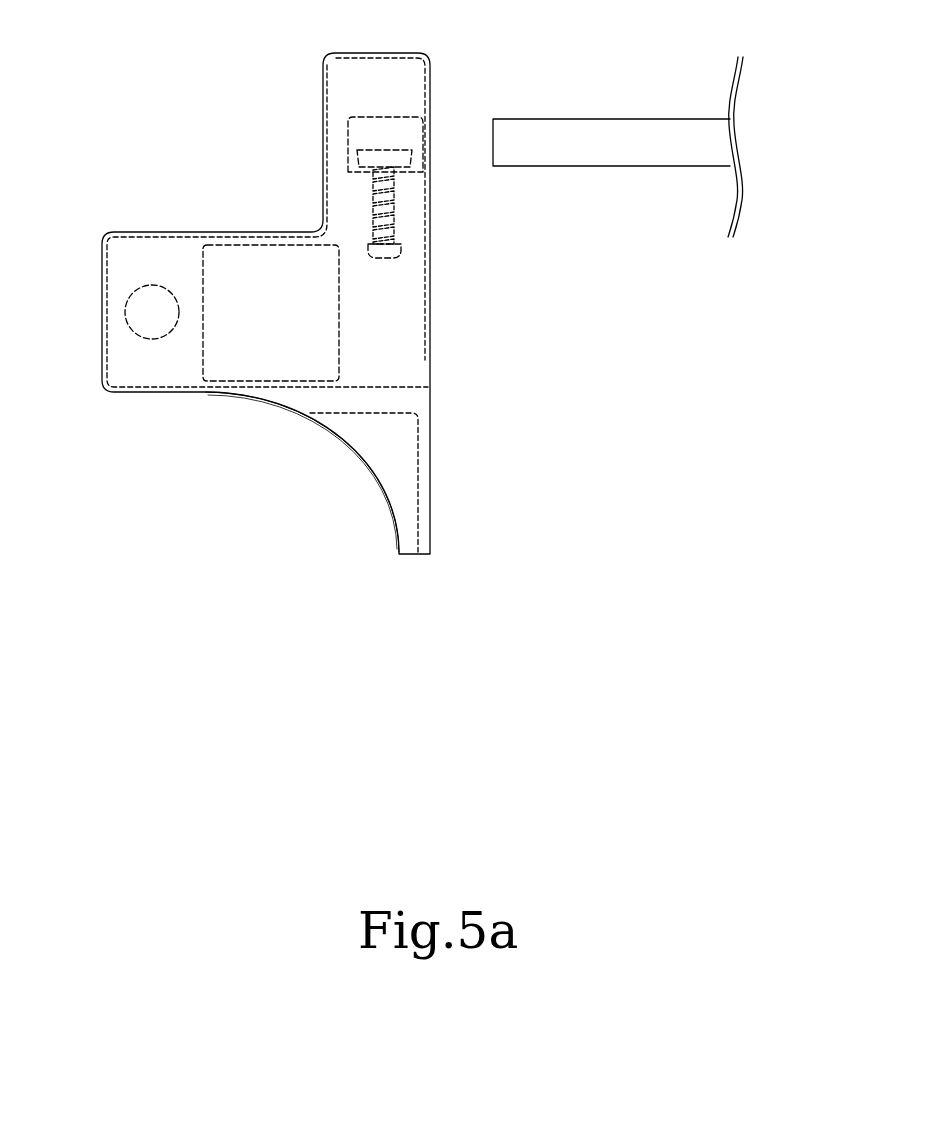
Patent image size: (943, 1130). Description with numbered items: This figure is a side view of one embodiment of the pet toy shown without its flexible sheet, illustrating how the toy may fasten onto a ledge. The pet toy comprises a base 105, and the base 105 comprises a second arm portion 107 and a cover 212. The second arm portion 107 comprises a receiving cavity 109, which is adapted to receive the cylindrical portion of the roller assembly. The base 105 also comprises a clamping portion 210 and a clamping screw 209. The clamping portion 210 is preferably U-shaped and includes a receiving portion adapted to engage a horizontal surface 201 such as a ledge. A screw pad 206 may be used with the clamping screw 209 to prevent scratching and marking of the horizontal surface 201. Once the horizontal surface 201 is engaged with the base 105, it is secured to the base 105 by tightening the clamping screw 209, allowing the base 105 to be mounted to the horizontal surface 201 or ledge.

The base 105 is at (337, 53).
The second arm portion 107 is at (158, 394).
The receiving cavity 109 is at (137, 288).
The horizontal surface 201 is at (589, 151).
The screw pad 206 is at (365, 150).
The clamping screw 209 is at (398, 257).
The clamping portion 210 is at (403, 117).
The cover 212 is at (227, 245).